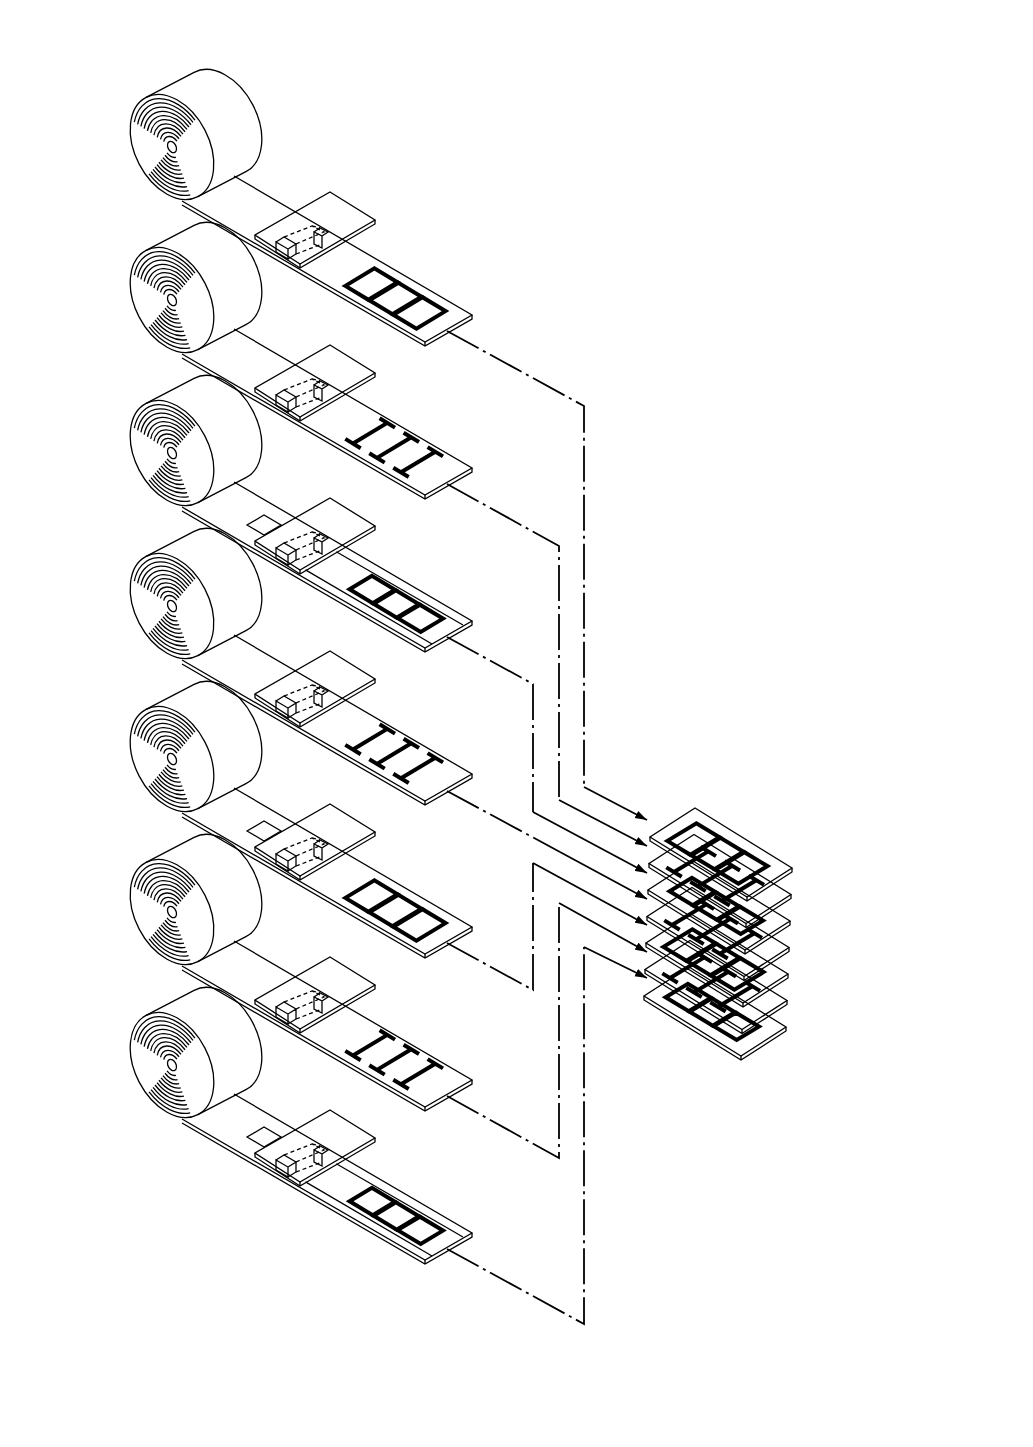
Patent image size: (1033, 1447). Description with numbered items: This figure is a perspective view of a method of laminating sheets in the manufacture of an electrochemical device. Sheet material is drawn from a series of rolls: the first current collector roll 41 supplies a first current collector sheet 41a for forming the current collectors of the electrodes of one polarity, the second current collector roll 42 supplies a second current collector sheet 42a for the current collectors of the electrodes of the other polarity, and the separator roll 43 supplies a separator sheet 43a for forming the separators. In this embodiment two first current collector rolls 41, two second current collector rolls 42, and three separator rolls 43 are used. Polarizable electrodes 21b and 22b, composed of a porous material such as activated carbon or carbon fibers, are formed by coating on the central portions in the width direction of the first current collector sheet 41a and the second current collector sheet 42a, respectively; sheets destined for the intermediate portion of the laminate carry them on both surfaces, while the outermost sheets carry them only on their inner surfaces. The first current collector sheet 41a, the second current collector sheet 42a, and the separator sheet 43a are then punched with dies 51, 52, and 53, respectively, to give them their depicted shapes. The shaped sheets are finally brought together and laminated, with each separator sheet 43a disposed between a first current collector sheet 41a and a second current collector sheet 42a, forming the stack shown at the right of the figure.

The second current collector roll 42 is at (148, 93).
The separator roll 43 is at (138, 245).
The first current collector roll 41 is at (138, 398).
The second current collector sheet 42a is at (272, 206).
The separator sheet 43a is at (272, 359).
The first current collector sheet 41a is at (272, 512).
The die 52 is at (362, 208).
The die 53 is at (362, 361).
The die 51 is at (362, 514).
The polarizable electrode 21b is at (390, 597).
The polarizable electrode 22b is at (390, 903).